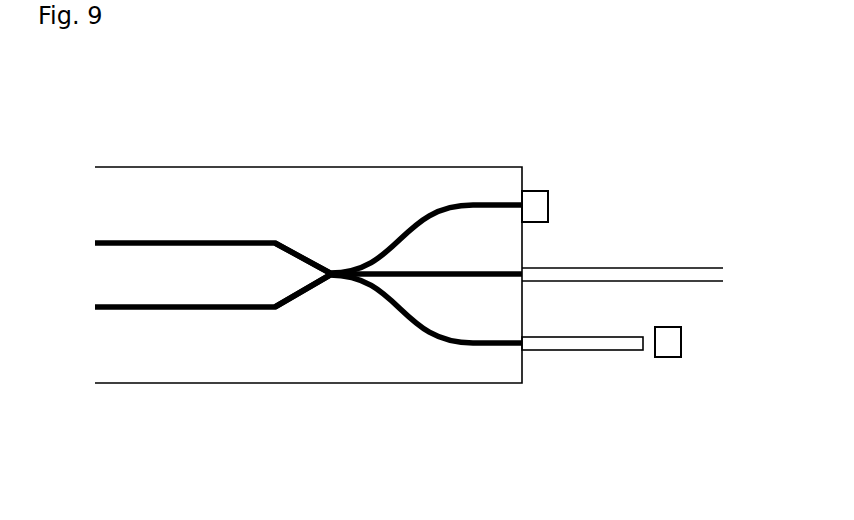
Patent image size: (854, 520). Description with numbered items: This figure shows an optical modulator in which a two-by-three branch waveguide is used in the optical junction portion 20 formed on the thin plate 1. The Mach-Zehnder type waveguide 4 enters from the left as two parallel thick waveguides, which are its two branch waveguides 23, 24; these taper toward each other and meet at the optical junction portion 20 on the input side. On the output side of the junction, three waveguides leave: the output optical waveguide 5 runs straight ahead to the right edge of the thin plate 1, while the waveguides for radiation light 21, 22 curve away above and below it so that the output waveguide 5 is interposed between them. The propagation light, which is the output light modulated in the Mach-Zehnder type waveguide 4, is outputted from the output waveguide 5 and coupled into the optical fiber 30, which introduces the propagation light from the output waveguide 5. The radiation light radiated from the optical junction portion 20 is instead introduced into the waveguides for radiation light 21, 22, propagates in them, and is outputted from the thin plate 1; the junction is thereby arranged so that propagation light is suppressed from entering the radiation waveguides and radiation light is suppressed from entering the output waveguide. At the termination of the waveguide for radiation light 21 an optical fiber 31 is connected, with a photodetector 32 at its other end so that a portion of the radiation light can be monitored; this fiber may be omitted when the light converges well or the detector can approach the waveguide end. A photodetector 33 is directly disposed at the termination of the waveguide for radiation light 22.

The thin plate 1 is at (240, 187).
The Mach-Zehnder type waveguide 4 is at (183, 310).
The output optical waveguide 5 is at (468, 278).
The optical junction portion 20 is at (333, 288).
The waveguide for radiation light 21 is at (418, 327).
The waveguide for radiation light 22 is at (473, 205).
The branch waveguide 23 is at (302, 297).
The branch waveguide 24 is at (302, 253).
The optical fiber 30 is at (647, 275).
The optical fiber 31 is at (570, 342).
The photodetector (PD) 32 is at (675, 348).
The photodetector (PD) 33 is at (537, 200).